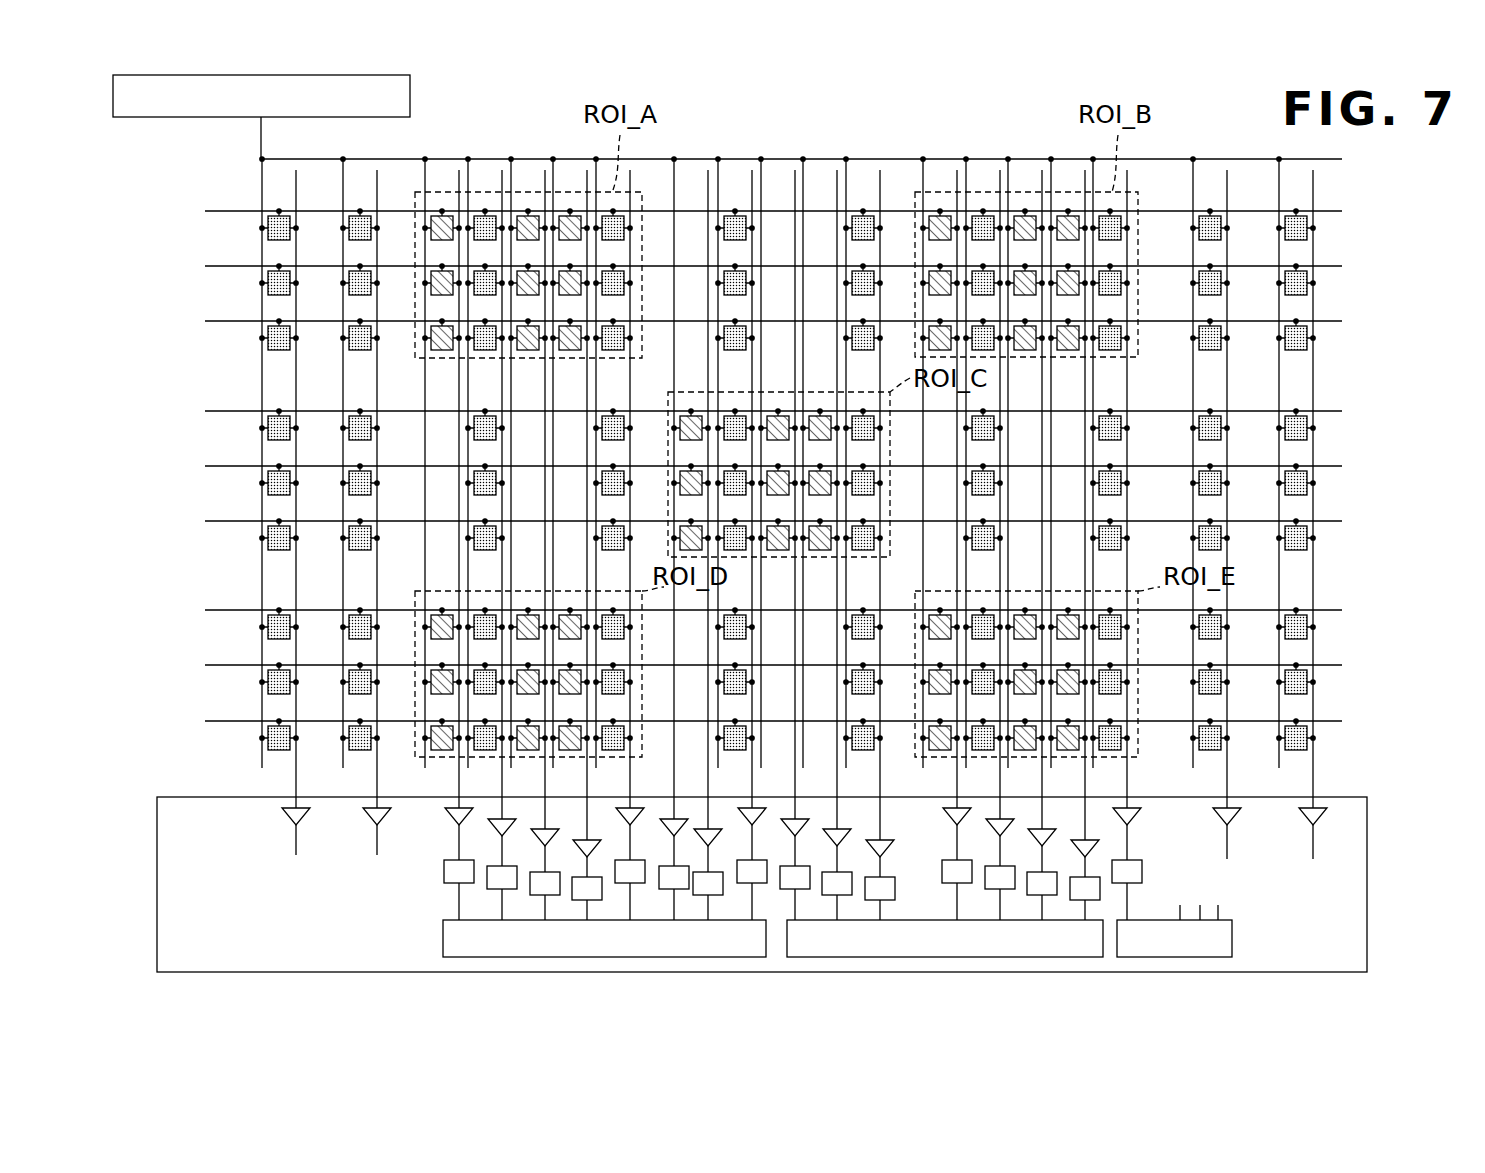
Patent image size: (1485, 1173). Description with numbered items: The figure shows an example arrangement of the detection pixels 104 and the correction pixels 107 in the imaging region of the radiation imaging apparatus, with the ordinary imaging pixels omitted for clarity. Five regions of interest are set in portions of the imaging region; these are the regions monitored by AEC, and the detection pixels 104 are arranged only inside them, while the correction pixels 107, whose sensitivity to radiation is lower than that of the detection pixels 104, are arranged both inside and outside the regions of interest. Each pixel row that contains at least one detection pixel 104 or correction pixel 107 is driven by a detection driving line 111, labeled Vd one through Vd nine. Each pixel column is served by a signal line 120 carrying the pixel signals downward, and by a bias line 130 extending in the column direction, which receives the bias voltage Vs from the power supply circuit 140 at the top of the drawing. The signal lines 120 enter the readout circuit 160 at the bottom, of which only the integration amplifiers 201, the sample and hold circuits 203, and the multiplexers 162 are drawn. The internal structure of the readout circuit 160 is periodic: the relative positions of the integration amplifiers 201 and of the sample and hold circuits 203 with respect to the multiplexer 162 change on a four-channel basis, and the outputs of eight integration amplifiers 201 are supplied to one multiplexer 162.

The power supply circuit 140 is at (135, 117).
The detection driving line 111 is at (397, 205).
The detection pixel 104 is at (445, 208).
The correction pixel 107 is at (488, 205).
The bias line 130 is at (423, 396).
The signal line 120 is at (657, 387).
The readout circuit 160 is at (762, 859).
The integration amplifier 201 is at (447, 822).
The sample and hold circuit 203 is at (443, 871).
The multiplexer 162 is at (443, 930).